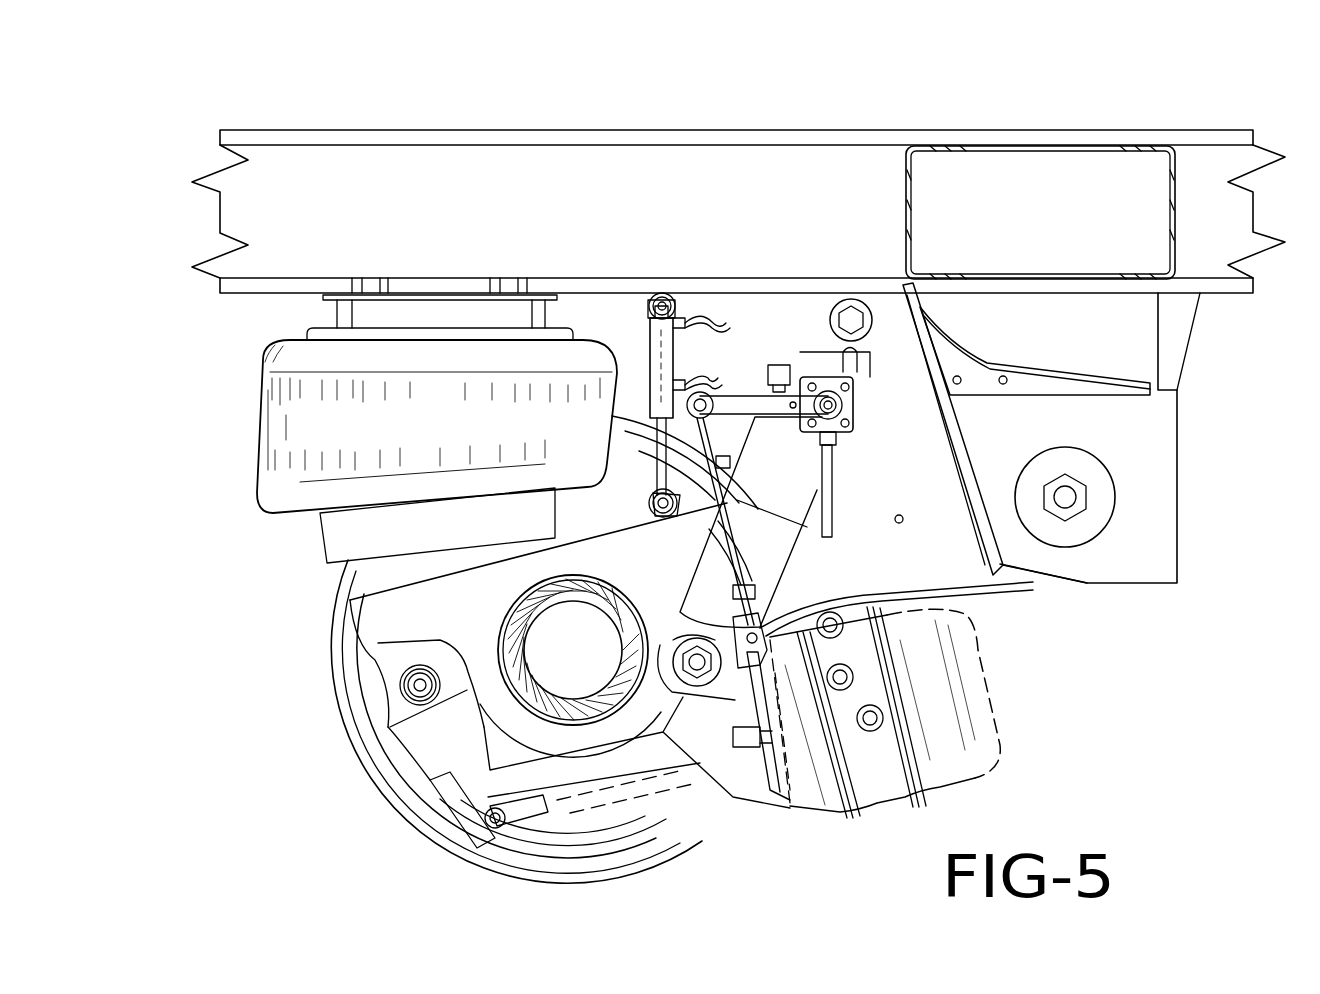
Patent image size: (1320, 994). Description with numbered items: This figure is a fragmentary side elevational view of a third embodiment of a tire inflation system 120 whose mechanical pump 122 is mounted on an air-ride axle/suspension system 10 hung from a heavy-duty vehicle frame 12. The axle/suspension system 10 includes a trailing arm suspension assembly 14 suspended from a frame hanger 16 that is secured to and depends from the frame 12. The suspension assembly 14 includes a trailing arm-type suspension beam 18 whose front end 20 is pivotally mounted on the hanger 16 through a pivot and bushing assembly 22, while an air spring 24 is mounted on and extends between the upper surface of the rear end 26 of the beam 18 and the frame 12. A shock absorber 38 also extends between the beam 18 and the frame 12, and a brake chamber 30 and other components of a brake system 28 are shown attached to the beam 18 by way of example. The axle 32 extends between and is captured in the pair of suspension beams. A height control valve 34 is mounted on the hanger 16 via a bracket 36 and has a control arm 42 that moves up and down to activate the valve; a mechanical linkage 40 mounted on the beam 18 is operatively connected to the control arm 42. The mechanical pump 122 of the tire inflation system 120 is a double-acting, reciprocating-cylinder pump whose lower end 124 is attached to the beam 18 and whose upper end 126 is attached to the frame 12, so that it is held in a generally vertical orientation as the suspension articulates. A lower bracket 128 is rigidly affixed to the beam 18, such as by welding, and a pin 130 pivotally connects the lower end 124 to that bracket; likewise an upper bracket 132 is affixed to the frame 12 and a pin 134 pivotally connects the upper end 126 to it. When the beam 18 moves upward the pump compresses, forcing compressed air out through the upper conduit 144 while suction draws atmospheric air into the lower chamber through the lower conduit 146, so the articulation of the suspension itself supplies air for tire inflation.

The air-ride axle/suspension system 10 is at (232, 360).
The vehicle frame 12 is at (1216, 132).
The trailing arm suspension assembly 14 is at (997, 594).
The frame hanger 16 is at (1178, 548).
The suspension beam 18 is at (947, 568).
The front end 20 is at (1040, 578).
The pivot and bushing assembly 22 is at (1088, 472).
The air spring 24 is at (455, 441).
The rear end 26 is at (368, 608).
The brake system 28 is at (766, 803).
The brake chamber 30 is at (975, 752).
The axle 32 is at (520, 612).
The height control valve 34 is at (857, 402).
The bracket 36 is at (862, 372).
The shock absorber 38 is at (805, 500).
The mechanical linkage 40 is at (740, 547).
The control arm 42 is at (780, 412).
The tire inflation system 120 is at (602, 330).
The mechanical pump 122 is at (642, 328).
The lower end 124 is at (613, 455).
The upper end 126 is at (673, 300).
The lower bracket 128 is at (650, 500).
The pin 130 is at (666, 520).
The upper bracket 132 is at (675, 300).
The pin 134 is at (663, 298).
The upper conduit 144 is at (727, 326).
The lower conduit 146 is at (703, 370).